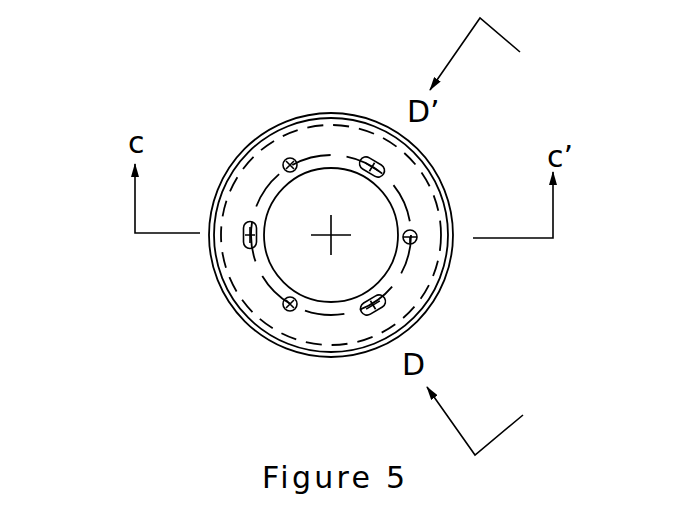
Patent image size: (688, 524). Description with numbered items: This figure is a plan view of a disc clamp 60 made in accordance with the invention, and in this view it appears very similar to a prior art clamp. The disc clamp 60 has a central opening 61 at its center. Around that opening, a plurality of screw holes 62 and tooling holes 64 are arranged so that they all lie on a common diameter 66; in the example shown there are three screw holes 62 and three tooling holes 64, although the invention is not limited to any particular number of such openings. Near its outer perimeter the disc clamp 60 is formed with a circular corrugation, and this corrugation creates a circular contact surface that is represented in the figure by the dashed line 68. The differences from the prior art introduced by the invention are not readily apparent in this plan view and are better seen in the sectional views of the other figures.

The disc clamp 60 is at (504, 98).
The central opening 61 is at (333, 168).
The screw holes 62 is at (285, 160).
The tooling holes 64 is at (372, 158).
The common diameter 66 is at (404, 272).
The dashed line representing circular contact surface 68 is at (220, 190).